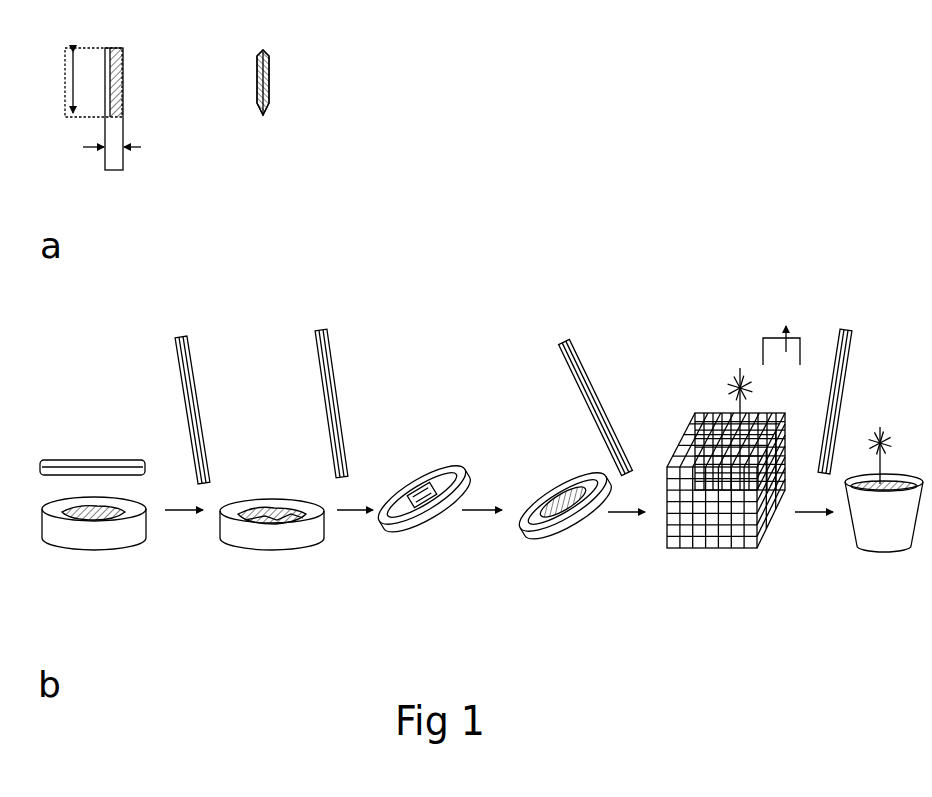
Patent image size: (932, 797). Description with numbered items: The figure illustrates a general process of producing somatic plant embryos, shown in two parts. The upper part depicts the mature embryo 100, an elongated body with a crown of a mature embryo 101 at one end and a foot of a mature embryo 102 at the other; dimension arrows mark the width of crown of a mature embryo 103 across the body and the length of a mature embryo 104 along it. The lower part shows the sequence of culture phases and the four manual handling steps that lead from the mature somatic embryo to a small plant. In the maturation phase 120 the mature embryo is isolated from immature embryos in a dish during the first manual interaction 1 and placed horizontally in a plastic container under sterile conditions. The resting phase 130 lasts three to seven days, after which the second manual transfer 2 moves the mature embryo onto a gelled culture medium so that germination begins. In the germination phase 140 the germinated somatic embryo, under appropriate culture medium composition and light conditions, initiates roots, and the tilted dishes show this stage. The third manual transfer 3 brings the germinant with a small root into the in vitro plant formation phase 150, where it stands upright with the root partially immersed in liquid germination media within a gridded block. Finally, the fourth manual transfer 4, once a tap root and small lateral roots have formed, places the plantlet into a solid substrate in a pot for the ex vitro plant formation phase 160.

The mature embryo 100 is at (257, 100).
The crown of a mature embryo 101 is at (270, 60).
The foot of a mature embryo 102 is at (270, 102).
The width of crown of a mature embryo 103 is at (115, 148).
The length of a mature embryo 104 is at (87, 82).
The first manual interaction 1 is at (192, 381).
The second manual transfer 2 is at (331, 378).
The third manual transfer 3 is at (596, 377).
The fourth manual transfer 4 is at (840, 376).
The maturation phase 120 is at (93, 530).
The resting phase 130 is at (272, 549).
The germination phase 140 is at (495, 529).
The in vitro plant formation phase 150 is at (733, 464).
The ex vitro plant formation phase 160 is at (884, 514).